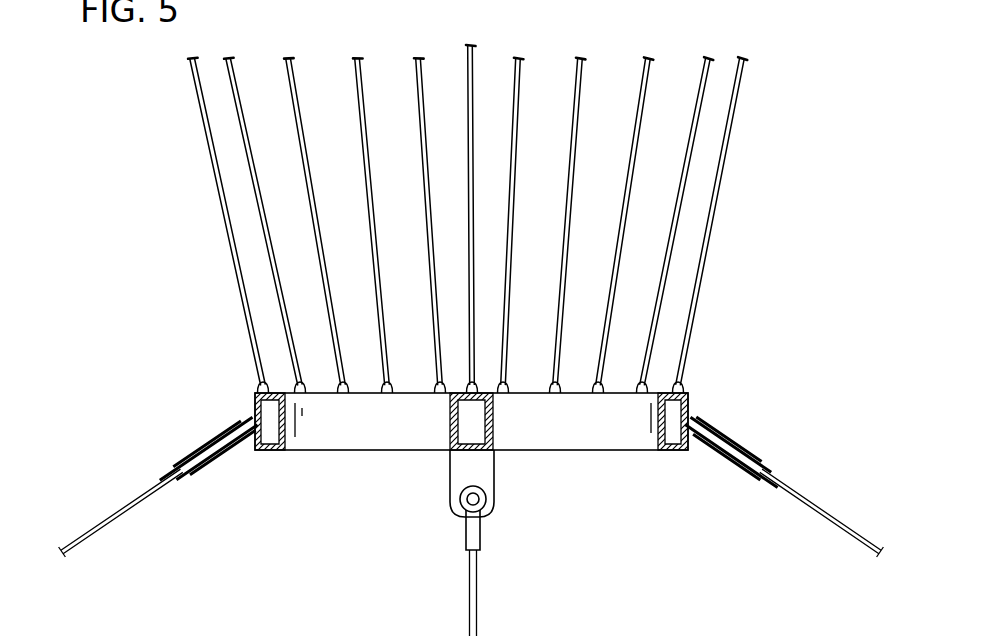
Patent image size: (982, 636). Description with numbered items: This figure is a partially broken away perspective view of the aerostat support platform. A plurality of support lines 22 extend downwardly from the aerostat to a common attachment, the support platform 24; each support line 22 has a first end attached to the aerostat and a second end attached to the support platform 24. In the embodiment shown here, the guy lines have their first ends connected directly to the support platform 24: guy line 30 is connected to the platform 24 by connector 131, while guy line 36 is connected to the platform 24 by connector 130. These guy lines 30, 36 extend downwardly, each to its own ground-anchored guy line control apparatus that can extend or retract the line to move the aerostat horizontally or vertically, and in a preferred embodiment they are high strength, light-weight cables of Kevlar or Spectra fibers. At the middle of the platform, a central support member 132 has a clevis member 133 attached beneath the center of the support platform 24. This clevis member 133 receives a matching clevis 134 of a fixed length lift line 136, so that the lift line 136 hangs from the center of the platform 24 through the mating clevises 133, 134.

The support lines 22 is at (720, 195).
The support platform 24 is at (283, 428).
The guy line 30 is at (838, 518).
The guy line 36 is at (105, 522).
The connector 130 is at (210, 443).
The connector 131 is at (728, 438).
The central support member 132 is at (495, 408).
The clevis member 133 is at (448, 465).
The clevis 134 is at (481, 529).
The fixed length lift line 136 is at (478, 583).